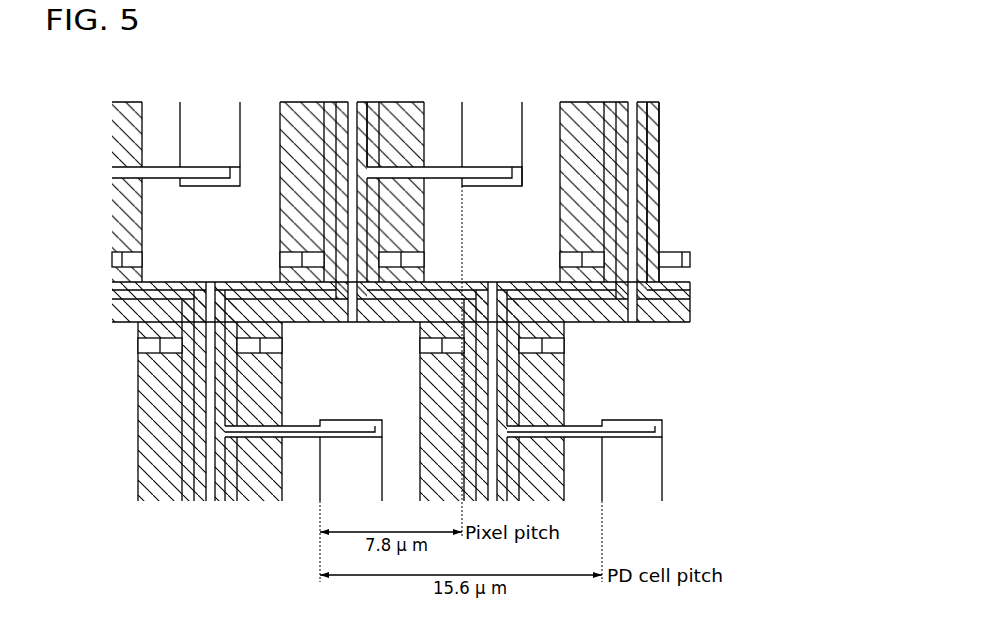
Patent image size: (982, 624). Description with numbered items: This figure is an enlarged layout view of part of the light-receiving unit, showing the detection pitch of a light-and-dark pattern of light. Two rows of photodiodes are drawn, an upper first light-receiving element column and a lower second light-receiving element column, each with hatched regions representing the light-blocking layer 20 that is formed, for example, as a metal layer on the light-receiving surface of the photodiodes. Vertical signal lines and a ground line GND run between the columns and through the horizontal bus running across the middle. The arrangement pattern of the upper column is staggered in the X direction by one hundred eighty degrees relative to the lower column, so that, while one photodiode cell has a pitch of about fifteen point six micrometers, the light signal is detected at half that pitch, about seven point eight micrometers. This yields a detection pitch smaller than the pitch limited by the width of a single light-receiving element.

The light-blocking layer 20 is at (163, 502).
The ground line GND is at (653, 107).